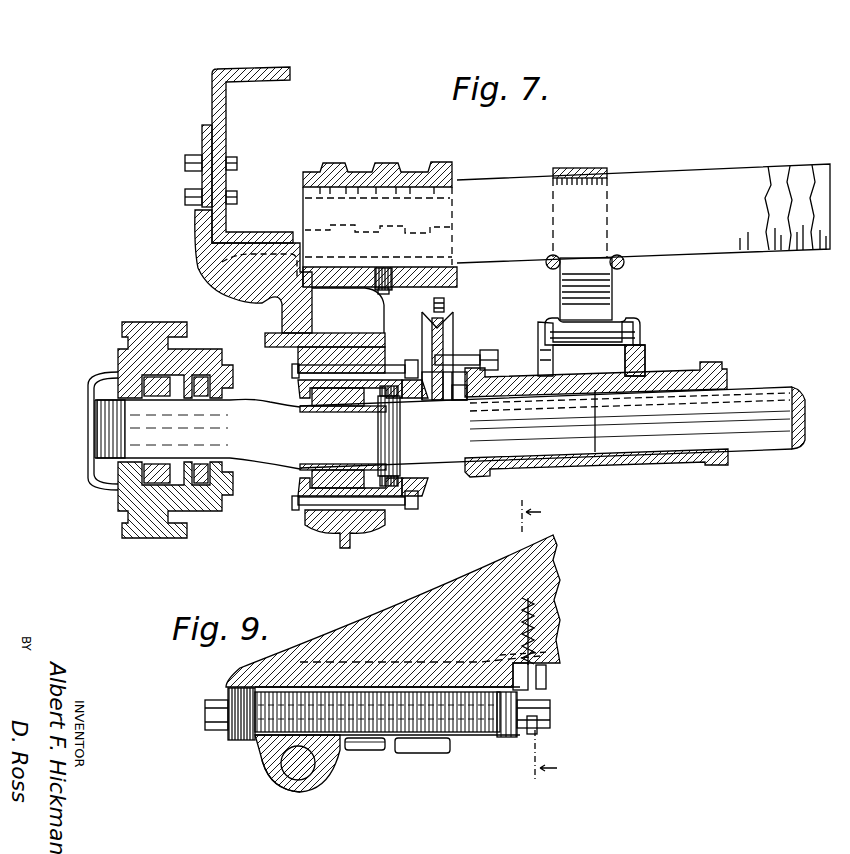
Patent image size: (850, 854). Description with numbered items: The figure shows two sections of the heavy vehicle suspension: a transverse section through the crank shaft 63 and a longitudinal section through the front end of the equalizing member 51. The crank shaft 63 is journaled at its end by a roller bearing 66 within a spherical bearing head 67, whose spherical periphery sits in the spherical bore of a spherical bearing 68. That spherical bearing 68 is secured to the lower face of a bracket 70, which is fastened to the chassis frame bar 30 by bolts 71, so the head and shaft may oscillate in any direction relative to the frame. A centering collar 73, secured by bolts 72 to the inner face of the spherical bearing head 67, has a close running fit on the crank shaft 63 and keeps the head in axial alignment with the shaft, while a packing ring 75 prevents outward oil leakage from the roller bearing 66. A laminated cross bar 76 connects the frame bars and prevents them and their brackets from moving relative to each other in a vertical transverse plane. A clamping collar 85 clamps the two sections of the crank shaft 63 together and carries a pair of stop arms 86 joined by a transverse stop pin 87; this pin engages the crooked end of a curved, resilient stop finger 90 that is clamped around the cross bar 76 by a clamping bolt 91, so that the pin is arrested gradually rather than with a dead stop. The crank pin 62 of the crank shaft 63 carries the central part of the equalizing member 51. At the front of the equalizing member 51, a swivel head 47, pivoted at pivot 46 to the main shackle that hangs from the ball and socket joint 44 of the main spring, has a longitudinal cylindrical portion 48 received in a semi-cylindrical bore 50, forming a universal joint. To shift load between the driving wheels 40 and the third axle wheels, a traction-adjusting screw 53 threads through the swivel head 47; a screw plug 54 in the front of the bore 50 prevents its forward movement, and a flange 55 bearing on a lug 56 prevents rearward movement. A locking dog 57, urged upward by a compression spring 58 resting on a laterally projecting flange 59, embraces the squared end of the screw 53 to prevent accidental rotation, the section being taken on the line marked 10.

In FIG. 7, the chassis frame bar 30 is at (251, 71).
In FIG. 7, the bolt 71 is at (185, 195).
In FIG. 7, the driving wheel 40 is at (258, 305).
In FIG. 7, the bracket 70 is at (458, 275).
In FIG. 7, the laminated cross bar 76 is at (769, 166).
In FIG. 7, the stop finger 90 is at (598, 159).
In FIG. 7, the clamping bolt 91 is at (622, 267).
In FIG. 7, the stop pin 87 is at (642, 327).
In FIG. 7, the stop arm 86 is at (644, 359).
In FIG. 7, the clamping collar 85 is at (598, 470).
In FIG. 7, the crank shaft 63 is at (790, 386).
In FIG. 7, the equalizing member 51 is at (140, 541).
In FIG. 9, the equalizing member 51 is at (436, 600).
In FIG. 7, the crank pin 62 is at (90, 427).
In FIG. 7, the spherical bearing 68 is at (310, 534).
In FIG. 7, the bolt 72 is at (292, 504).
In FIG. 7, the spherical bearing head 67 is at (368, 530).
In FIG. 7, the packing ring 75 is at (304, 407).
In FIG. 7, the roller bearing 66 is at (336, 407).
In FIG. 7, the ball and socket joint 44 is at (402, 410).
In FIG. 7, the centering collar 73 is at (410, 509).
In FIG. 7, the section line 10 is at (518, 516).
In FIG. 9, the section line 10 is at (531, 758).
In FIG. 9, the longitudinal cylindrical portion 48 is at (273, 687).
In FIG. 9, the screw plug 54 is at (248, 741).
In FIG. 9, the pivot 46 is at (318, 776).
In FIG. 9, the swivel head 47 is at (282, 786).
In FIG. 9, the semi-cylindrical bore 50 is at (392, 740).
In FIG. 9, the traction-adjusting screw 53 is at (552, 712).
In FIG. 9, the lug 56 is at (505, 738).
In FIG. 9, the flange 55 is at (529, 688).
In FIG. 9, the locking dog 57 is at (548, 677).
In FIG. 9, the compression spring 58 is at (560, 625).
In FIG. 9, the laterally projecting flange 59 is at (550, 653).